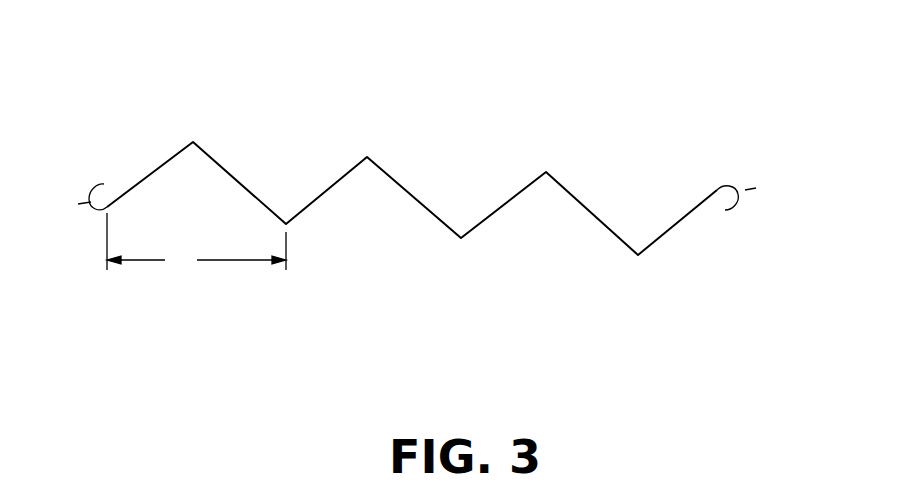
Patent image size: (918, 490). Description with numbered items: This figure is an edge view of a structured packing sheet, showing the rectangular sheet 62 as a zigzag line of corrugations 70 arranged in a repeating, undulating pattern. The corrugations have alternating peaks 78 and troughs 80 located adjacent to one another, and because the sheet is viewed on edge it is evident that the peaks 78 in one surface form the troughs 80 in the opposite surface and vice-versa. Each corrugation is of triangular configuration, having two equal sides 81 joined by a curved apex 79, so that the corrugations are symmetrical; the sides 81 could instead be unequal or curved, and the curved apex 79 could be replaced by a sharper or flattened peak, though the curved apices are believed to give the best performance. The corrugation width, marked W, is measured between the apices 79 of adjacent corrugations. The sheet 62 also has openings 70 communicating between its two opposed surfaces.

The rectangular sheet 62 is at (739, 166).
The openings 70 is at (238, 372).
The peaks 78 is at (179, 100).
The curved apex 79 is at (193, 142).
The troughs 80 is at (266, 177).
The sides 81 is at (157, 165).